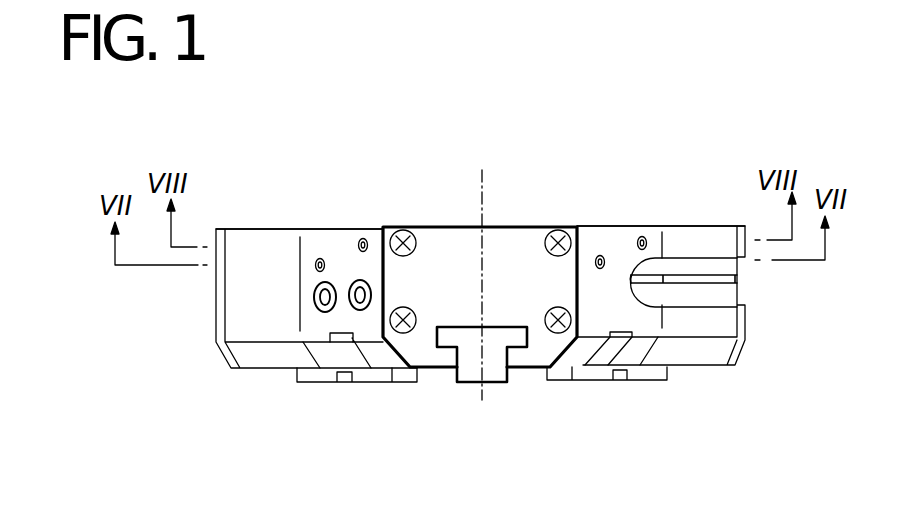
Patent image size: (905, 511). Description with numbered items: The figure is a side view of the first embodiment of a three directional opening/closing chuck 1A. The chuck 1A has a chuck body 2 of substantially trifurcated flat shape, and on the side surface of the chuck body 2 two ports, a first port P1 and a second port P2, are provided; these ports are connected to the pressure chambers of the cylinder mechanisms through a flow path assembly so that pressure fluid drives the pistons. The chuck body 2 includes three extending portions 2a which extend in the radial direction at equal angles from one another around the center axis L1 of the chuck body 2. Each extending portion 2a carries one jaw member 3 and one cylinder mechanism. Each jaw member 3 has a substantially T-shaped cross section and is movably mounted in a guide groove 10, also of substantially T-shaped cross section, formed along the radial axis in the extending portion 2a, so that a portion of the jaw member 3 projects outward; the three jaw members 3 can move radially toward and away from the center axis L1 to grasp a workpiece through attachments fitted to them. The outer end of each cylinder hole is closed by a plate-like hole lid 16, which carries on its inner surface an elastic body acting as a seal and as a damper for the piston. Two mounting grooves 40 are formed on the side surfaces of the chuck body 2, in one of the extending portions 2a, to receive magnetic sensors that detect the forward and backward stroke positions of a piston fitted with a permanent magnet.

The three directional opening/closing chuck 1A is at (602, 162).
The chuck body 2 is at (243, 302).
The extending portion 2a is at (252, 229).
The hole lid 16 is at (439, 226).
The guide groove 10 is at (444, 367).
The center axis L1 is at (484, 271).
The first port P1 is at (319, 283).
The second port P2 is at (352, 276).
The mounting groove 40 is at (717, 262).
The jaw member 3 is at (366, 382).